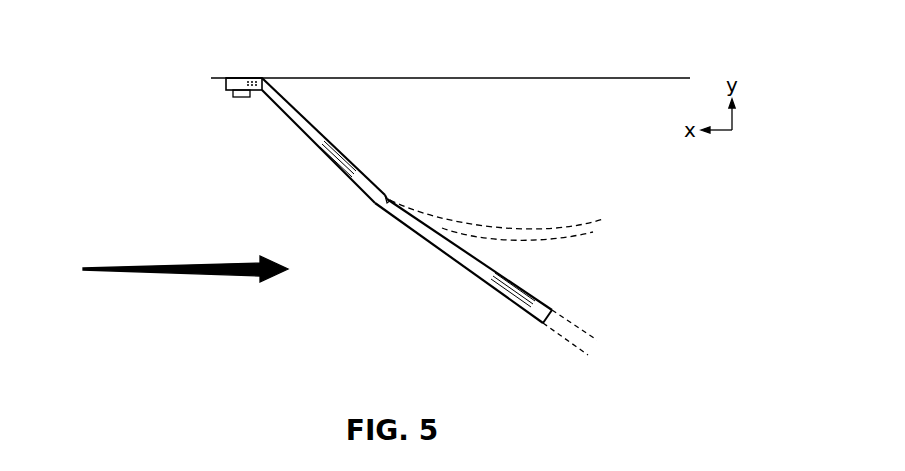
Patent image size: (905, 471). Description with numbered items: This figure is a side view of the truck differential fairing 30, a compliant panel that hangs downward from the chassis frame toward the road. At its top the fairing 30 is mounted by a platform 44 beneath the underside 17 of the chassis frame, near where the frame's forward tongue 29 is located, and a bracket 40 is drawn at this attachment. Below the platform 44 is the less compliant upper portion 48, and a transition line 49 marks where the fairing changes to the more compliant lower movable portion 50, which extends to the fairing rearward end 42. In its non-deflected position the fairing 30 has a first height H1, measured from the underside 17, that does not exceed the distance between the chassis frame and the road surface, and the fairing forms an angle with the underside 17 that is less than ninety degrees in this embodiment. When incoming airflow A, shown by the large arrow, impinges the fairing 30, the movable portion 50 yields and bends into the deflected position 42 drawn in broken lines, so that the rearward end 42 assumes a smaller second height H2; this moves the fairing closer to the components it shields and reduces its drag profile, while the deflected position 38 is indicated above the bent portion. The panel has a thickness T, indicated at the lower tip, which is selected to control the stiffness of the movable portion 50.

The underside of the chassis frame 17 is at (578, 78).
The forward tongue 29 is at (407, 176).
The truck differential fairing 30 is at (406, 247).
The deflected position 38 is at (483, 204).
The mounting bracket 40 is at (226, 86).
The fairing rearward end 42 is at (598, 228).
The platform 44 is at (239, 79).
The upper portion 48 is at (301, 115).
The transition line 49 is at (386, 198).
The movable portion 50 is at (526, 238).
The first height H1 is at (557, 308).
The second height H2 is at (608, 86).
The thickness T is at (578, 340).
The airflow A is at (240, 281).